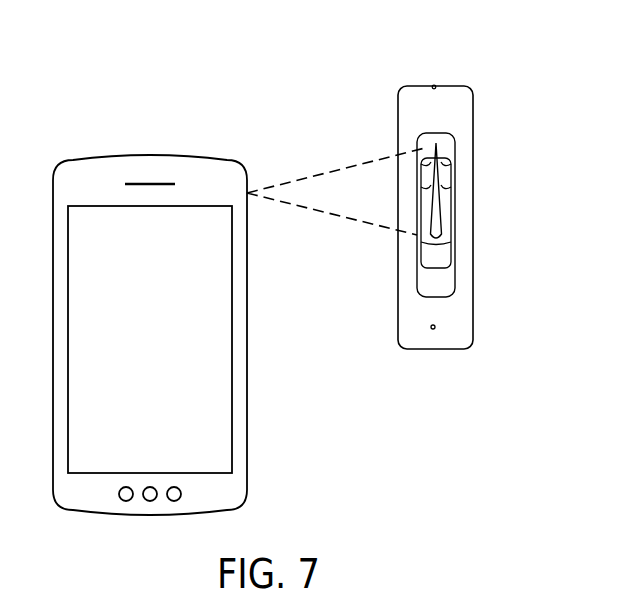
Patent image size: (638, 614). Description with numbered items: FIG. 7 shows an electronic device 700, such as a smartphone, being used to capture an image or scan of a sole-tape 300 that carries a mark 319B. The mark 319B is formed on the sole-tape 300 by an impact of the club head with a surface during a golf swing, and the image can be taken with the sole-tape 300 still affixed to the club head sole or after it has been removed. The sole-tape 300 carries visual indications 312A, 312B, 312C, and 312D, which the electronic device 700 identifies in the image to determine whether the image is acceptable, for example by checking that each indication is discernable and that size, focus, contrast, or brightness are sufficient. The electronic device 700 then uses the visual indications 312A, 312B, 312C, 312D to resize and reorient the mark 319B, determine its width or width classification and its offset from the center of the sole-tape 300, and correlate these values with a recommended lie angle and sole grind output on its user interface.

The electronic device 700 is at (87, 157).
The sole-tape 300 is at (473, 122).
The visual indicator 312A is at (434, 85).
The visual indicator 312B is at (433, 330).
The visual indication 312C is at (402, 213).
The visual indication 312D is at (471, 213).
The mark 319B is at (443, 177).